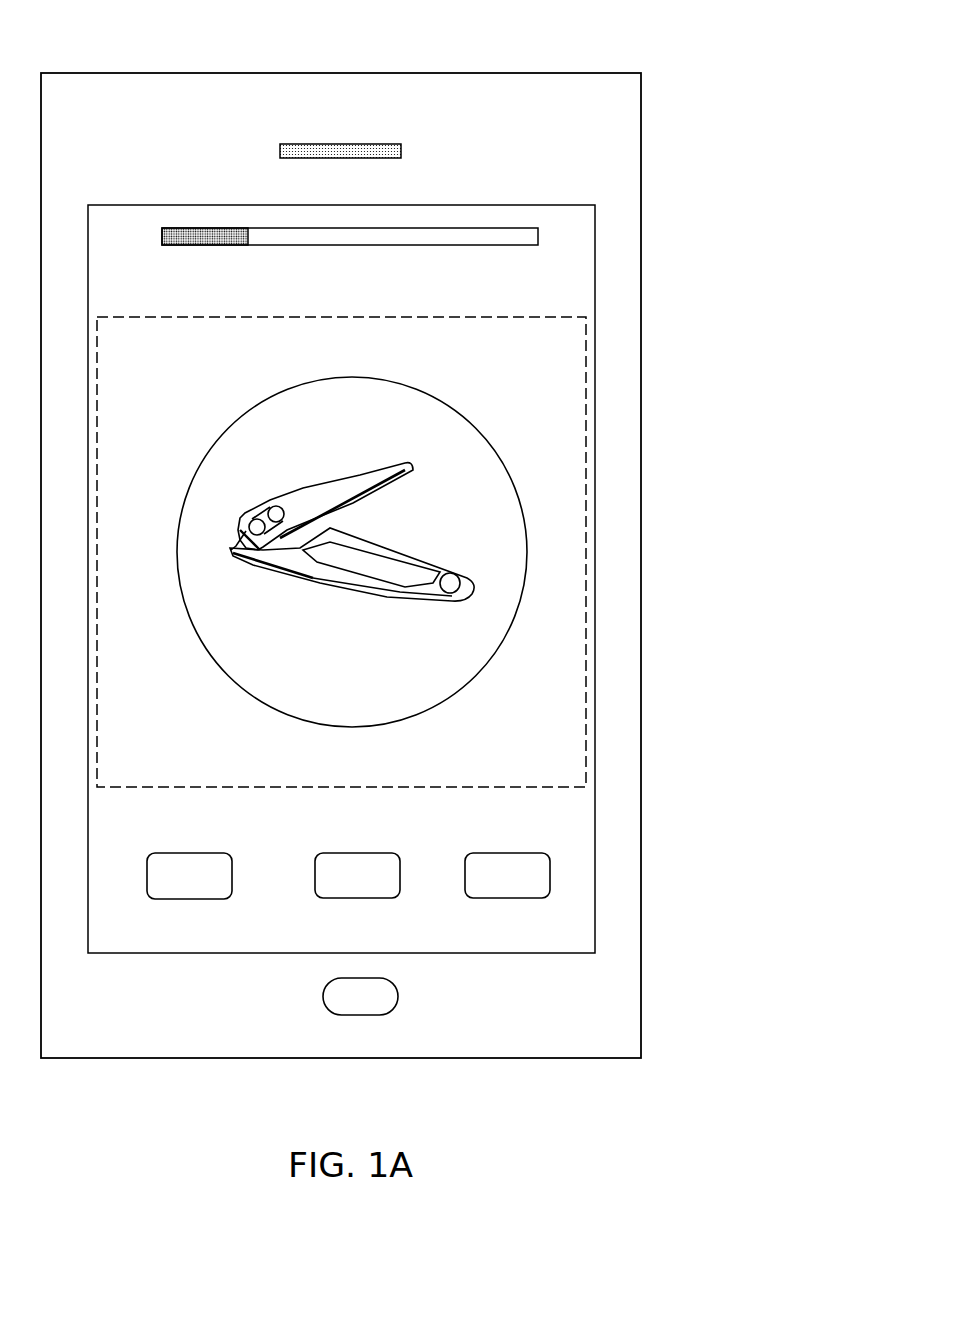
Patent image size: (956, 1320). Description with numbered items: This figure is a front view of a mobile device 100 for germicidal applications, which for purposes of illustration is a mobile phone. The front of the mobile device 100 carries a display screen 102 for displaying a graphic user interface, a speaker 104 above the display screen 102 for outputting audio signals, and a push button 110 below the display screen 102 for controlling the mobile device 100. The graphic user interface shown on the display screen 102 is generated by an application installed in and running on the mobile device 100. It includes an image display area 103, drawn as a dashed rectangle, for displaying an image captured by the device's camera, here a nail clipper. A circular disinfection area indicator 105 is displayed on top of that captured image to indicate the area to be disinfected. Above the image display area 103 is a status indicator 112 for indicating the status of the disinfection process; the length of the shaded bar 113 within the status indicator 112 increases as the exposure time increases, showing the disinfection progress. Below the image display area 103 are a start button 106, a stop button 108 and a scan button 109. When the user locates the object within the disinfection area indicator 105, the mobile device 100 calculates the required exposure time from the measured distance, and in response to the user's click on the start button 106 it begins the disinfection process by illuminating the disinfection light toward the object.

The mobile device 100 is at (511, 73).
The display screen 102 is at (595, 260).
The image display area 103 is at (417, 317).
The speaker 104 is at (382, 144).
The disinfection area indicator 105 is at (463, 418).
The start button 106 is at (188, 899).
The stop button 108 is at (365, 898).
The scan button 109 is at (513, 898).
The push button 110 is at (368, 1015).
The status indicator 112 is at (322, 228).
The shaded bar 113 is at (208, 232).